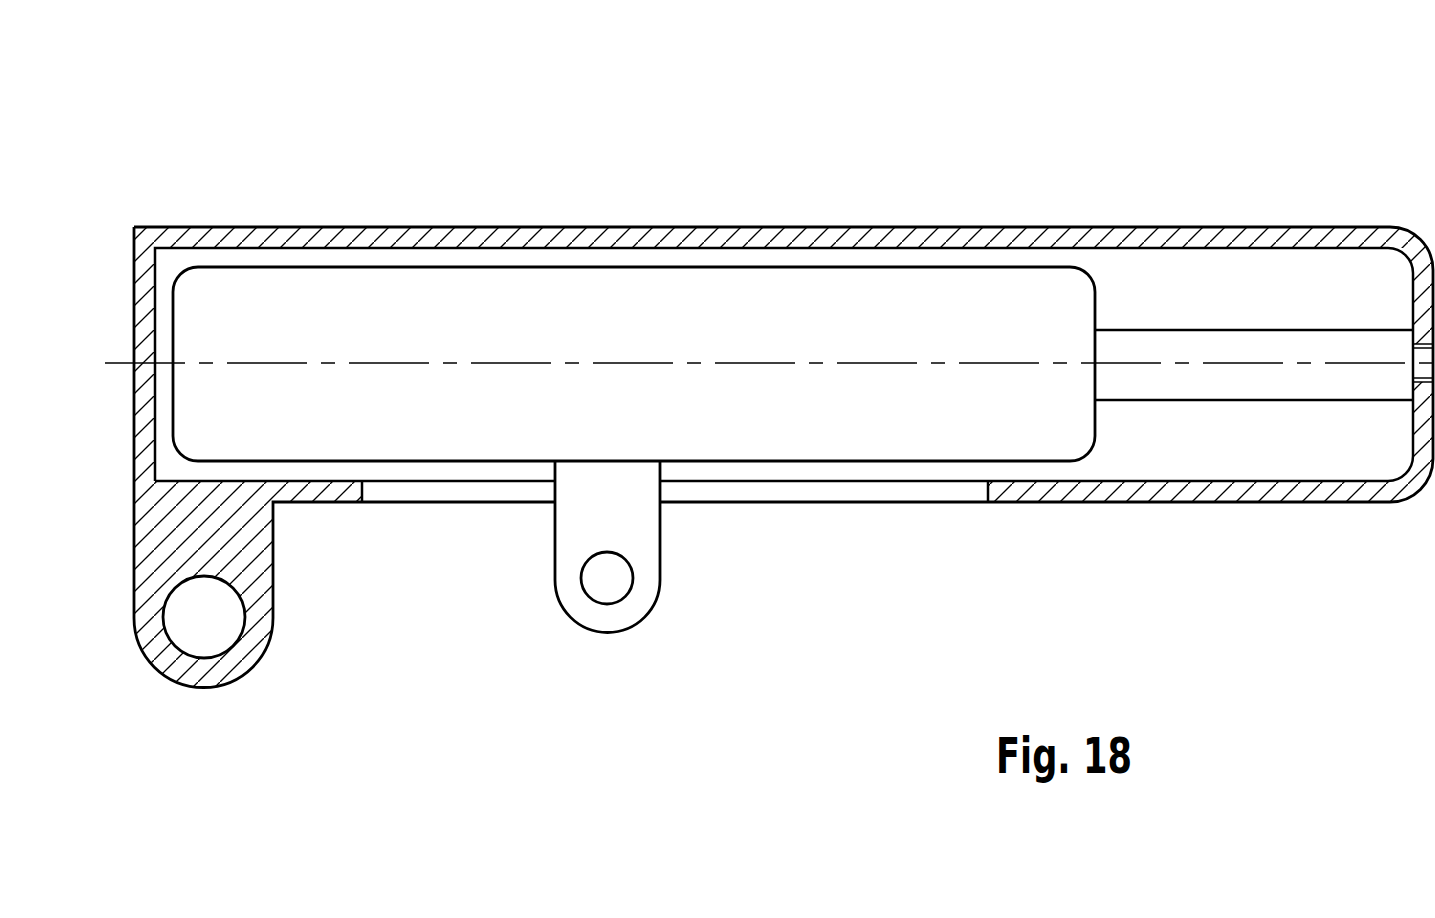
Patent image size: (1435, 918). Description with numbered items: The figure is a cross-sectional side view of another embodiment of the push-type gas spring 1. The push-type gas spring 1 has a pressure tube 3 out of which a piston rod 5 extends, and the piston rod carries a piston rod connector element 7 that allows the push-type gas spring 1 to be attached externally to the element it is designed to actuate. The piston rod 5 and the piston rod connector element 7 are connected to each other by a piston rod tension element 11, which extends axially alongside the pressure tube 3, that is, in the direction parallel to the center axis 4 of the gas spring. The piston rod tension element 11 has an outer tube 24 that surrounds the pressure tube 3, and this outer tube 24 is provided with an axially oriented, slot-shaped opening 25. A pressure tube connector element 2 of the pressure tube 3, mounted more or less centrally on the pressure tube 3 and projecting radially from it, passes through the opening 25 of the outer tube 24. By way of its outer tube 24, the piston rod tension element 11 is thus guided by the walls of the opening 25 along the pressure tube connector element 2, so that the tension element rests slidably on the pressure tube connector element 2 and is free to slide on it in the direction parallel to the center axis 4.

The push-type gas spring 1 is at (322, 162).
The pressure tube connector element 2 is at (585, 525).
The pressure tube 3 is at (477, 288).
The center axis 4 is at (120, 362).
The piston rod 5 is at (1282, 350).
The piston rod connector element 7 is at (243, 548).
The piston rod tension element 11 is at (1172, 213).
The outer tube 24 is at (695, 237).
The opening 25 is at (817, 490).